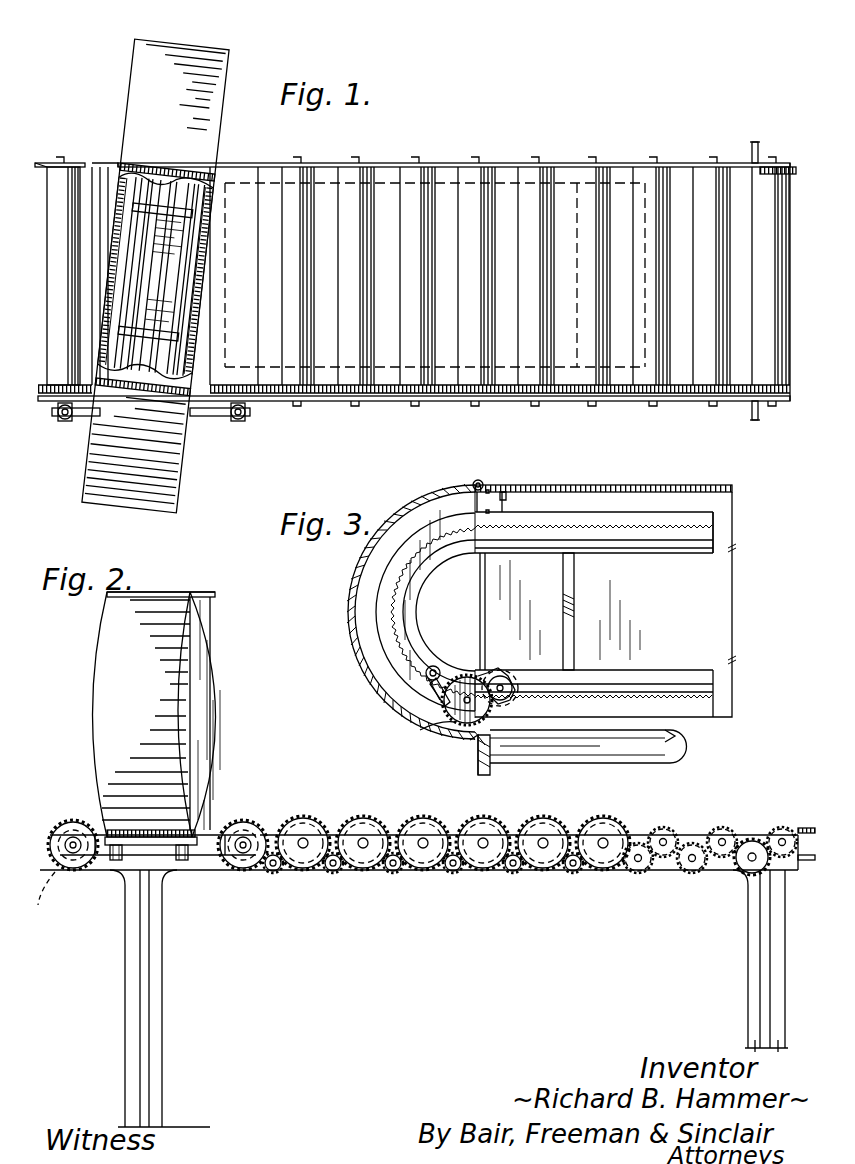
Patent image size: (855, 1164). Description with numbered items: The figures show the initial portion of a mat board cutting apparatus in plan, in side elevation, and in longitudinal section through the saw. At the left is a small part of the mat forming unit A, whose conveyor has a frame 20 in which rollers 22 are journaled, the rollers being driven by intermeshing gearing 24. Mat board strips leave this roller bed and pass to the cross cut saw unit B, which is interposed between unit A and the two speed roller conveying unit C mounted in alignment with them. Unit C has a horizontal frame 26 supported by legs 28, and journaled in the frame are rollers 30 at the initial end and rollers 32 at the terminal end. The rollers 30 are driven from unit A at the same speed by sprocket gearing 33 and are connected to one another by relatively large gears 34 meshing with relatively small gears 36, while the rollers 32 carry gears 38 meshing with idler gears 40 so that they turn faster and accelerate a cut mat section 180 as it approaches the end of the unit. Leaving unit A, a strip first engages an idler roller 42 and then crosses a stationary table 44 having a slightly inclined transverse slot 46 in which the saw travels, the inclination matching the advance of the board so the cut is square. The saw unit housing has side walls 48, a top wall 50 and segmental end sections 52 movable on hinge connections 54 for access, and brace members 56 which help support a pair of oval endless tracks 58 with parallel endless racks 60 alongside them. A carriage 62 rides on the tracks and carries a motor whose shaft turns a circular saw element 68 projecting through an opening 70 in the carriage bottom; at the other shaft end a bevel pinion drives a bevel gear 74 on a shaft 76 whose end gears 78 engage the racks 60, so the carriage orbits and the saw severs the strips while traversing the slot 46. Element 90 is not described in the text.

In FIG. 1, the frame 20 is at (44, 167).
In FIG. 2, the frame 20 is at (75, 870).
In FIG. 1, the rollers 22 is at (63, 276).
In FIG. 2, the rollers 22 is at (43, 900).
In FIG. 1, the intermeshing gearing 24 is at (45, 395).
In FIG. 2, the intermeshing gearing 24 is at (70, 820).
In FIG. 1, the horizontal frame 26 is at (614, 400).
In FIG. 3, the horizontal frame 26 is at (478, 763).
In FIG. 2, the horizontal frame 26 is at (208, 872).
In FIG. 1, the legs 28 is at (750, 148).
In FIG. 2, the legs 28 is at (160, 1000).
In FIG. 1, the rollers 30 is at (346, 272).
In FIG. 2, the rollers 30 is at (553, 820).
In FIG. 1, the rollers 32 is at (766, 287).
In FIG. 2, the rollers 32 is at (735, 833).
In FIG. 1, the sprocket gearing 33 is at (220, 413).
In FIG. 2, the sprocket gearing 33 is at (108, 875).
In FIG. 1, the large gears 34 is at (510, 393).
In FIG. 2, the large gears 34 is at (610, 820).
In FIG. 1, the small gears 36 is at (500, 385).
In FIG. 2, the small gears 36 is at (332, 880).
In FIG. 1, the gears 38 is at (705, 393).
In FIG. 2, the gears 38 is at (672, 832).
In FIG. 1, the idler gears 40 is at (676, 385).
In FIG. 2, the idler gears 40 is at (690, 875).
In FIG. 1, the idler roller 42 is at (108, 220).
In FIG. 3, the idler roller 42 is at (654, 763).
In FIG. 1, the stationary table 44 is at (199, 285).
In FIG. 3, the stationary table 44 is at (678, 735).
In FIG. 2, the stationary table 44 is at (158, 829).
In FIG. 1, the slot 46 is at (156, 264).
In FIG. 3, the side walls 48 is at (735, 605).
In FIG. 2, the side walls 48 is at (201, 713).
In FIG. 1, the top wall 50 is at (121, 279).
In FIG. 3, the top wall 50 is at (683, 492).
In FIG. 1, the segmental sections 52 is at (183, 493).
In FIG. 3, the segmental sections 52 is at (352, 628).
In FIG. 2, the segmental sections 52 is at (238, 690).
In FIG. 1, the hinge connections 54 is at (172, 172).
In FIG. 3, the hinge connections 54 is at (485, 484).
In FIG. 2, the hinge connections 54 is at (172, 592).
In FIG. 1, the brace members 56 is at (152, 210).
In FIG. 3, the brace members 56 is at (576, 607).
In FIG. 3, the endless tracks 58 is at (678, 690).
In FIG. 1, the endless racks 60 is at (176, 285).
In FIG. 3, the endless racks 60 is at (585, 522).
In FIG. 3, the carriage 62 is at (448, 700).
In FIG. 3, the circular saw element 68 is at (467, 700).
In FIG. 3, the opening 70 is at (460, 715).
In FIG. 3, the bevel gear 74 is at (477, 667).
In FIG. 3, the shaft 76 is at (425, 680).
In FIG. 3, the gears 78 is at (515, 700).
In FIG. 1, the end chain guide 90 is at (798, 172).
In FIG. 2, the end chain guide 90 is at (805, 828).
In FIG. 1, the mat section 180 is at (560, 178).
In FIG. 1, the mat forming unit A is at (80, 163).
In FIG. 2, the mat forming unit A is at (60, 865).
In FIG. 1, the cross cut saw unit B is at (164, 141).
In FIG. 3, the cross cut saw unit B is at (557, 485).
In FIG. 1, the two speed roller conveying unit C is at (388, 168).
In FIG. 3, the two speed roller conveying unit C is at (485, 770).
In FIG. 2, the two speed roller conveying unit C is at (551, 886).